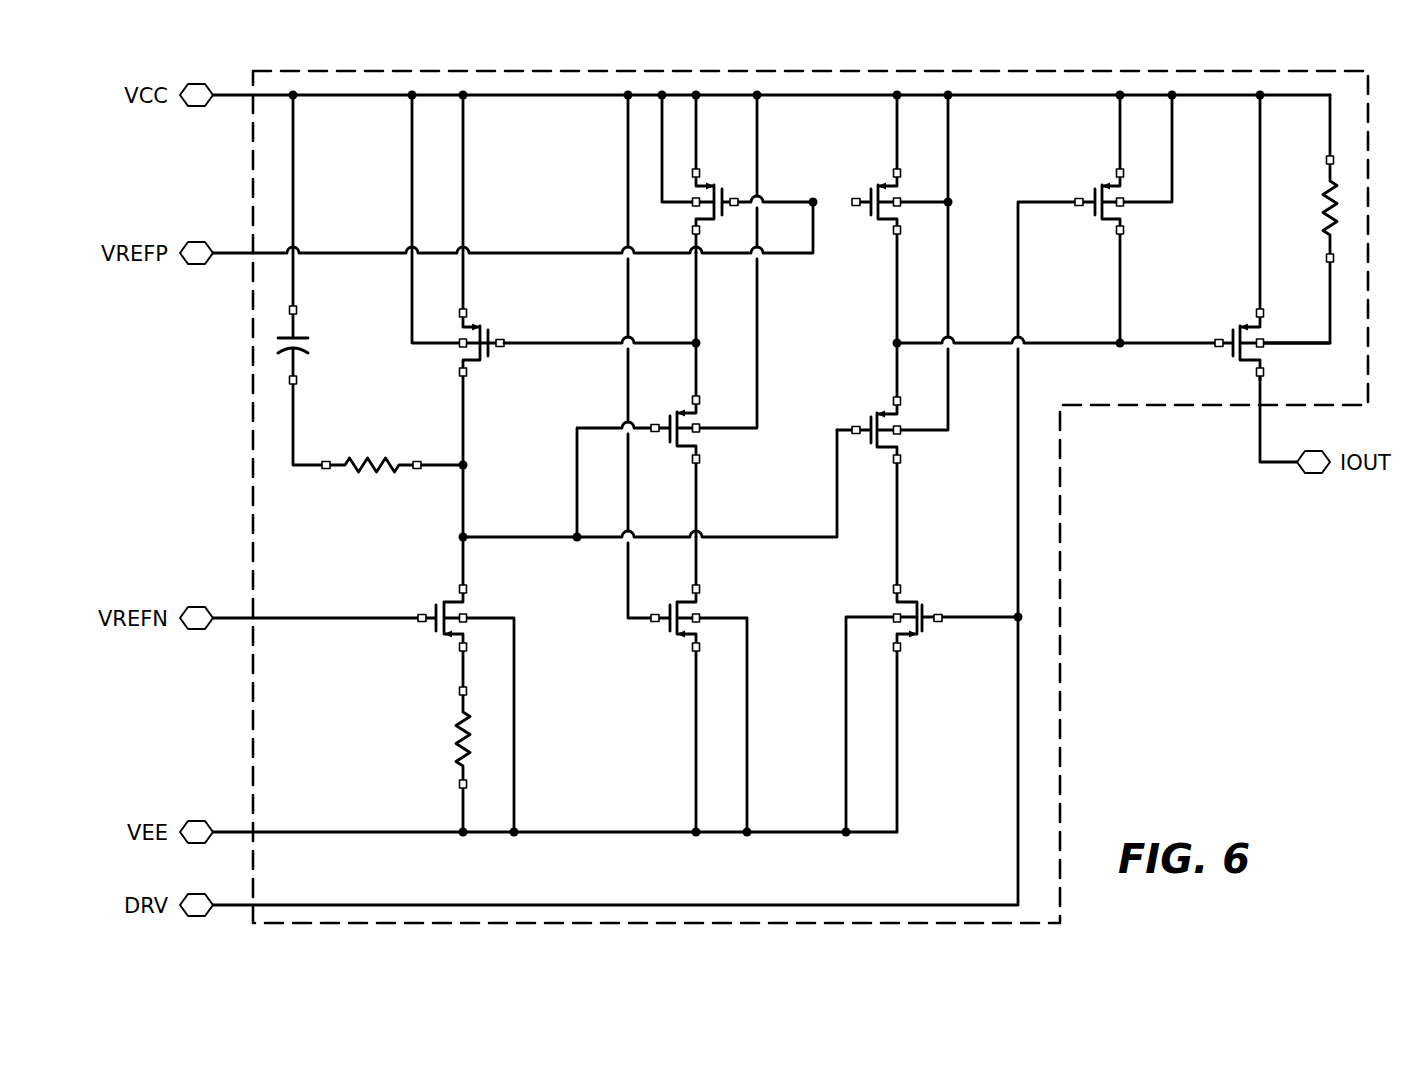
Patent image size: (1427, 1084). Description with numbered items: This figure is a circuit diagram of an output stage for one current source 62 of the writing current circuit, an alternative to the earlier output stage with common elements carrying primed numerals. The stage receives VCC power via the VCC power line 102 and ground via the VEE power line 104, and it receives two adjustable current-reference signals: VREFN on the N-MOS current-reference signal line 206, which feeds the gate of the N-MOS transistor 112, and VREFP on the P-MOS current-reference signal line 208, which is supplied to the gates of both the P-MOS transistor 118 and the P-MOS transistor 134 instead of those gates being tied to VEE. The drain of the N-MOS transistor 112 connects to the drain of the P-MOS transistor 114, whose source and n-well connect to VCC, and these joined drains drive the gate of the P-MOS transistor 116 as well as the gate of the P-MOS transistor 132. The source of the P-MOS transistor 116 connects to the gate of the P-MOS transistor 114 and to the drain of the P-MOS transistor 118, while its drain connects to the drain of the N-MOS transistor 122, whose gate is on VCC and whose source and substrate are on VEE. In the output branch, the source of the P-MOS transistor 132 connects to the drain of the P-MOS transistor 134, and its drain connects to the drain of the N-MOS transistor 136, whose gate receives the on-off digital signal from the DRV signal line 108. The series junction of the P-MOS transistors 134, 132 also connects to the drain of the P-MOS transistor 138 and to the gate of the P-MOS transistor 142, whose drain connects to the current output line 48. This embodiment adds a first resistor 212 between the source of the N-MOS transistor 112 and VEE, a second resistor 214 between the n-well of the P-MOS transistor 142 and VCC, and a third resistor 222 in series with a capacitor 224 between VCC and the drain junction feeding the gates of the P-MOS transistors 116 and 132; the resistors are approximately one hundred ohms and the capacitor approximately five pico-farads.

The VCC power line 102 is at (330, 97).
The P-MOS current-reference signal line 208 is at (330, 256).
The N-MOS current-reference signal line 206 is at (280, 621).
The VEE power line 104 is at (233, 828).
The DRV signal line 108 is at (243, 902).
The current output line 48 is at (1277, 466).
The current source 62 is at (1062, 667).
The capacitor 224 is at (315, 343).
The third resistor 222 is at (360, 470).
The first resistor 212 is at (456, 745).
The second resistor 214 is at (1322, 212).
The N-MOS transistor 112 is at (455, 598).
The P-MOS transistor 114 is at (478, 368).
The P-MOS transistor 116 is at (689, 408).
The P-MOS transistor 118 is at (703, 187).
The N-MOS transistor 122 is at (686, 648).
The P-MOS transistor 132 is at (892, 411).
The P-MOS transistor 134 is at (888, 228).
The N-MOS transistor 136 is at (910, 648).
The P-MOS transistor 138 is at (1110, 228).
The P-MOS transistor 142 is at (1248, 372).